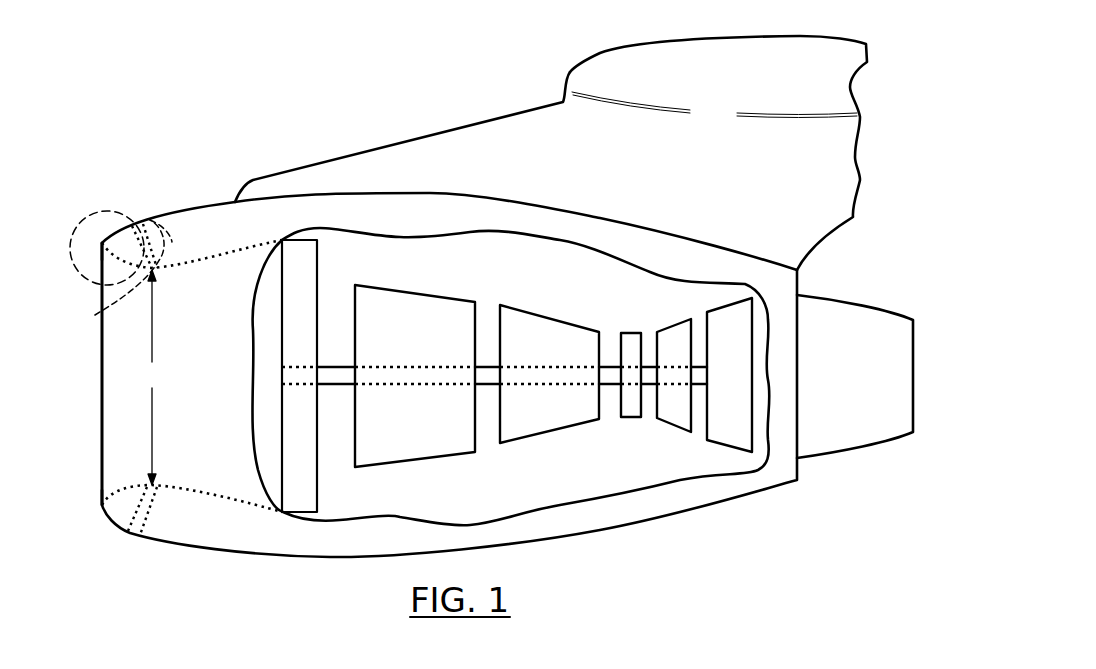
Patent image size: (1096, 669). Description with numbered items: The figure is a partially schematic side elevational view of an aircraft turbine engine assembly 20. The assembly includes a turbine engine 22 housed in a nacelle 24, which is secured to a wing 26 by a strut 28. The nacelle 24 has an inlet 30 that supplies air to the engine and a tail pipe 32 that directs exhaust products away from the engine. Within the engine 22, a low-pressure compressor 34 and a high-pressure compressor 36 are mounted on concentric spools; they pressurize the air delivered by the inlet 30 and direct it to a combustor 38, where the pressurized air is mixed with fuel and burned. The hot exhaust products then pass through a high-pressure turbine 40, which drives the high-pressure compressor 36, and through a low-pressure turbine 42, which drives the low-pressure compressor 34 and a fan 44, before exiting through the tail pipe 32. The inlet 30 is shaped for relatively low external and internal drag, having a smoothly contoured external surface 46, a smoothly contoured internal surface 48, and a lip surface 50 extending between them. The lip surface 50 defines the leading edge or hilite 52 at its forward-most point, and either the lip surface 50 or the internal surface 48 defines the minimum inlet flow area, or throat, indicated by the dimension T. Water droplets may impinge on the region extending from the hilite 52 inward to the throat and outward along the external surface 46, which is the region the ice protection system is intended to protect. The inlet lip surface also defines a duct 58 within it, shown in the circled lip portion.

The aircraft turbine engine assembly 20 is at (474, 363).
The turbine engine 22 is at (553, 477).
The nacelle 24 is at (449, 373).
The wing 26 is at (580, 62).
The strut 28 is at (456, 127).
The inlet 30 is at (92, 437).
The tail pipe 32 is at (855, 452).
The low-pressure compressor 34 is at (398, 464).
The high-pressure compressor 36 is at (523, 443).
The combustor 38 is at (631, 419).
The high-pressure turbine 40 is at (670, 430).
The low-pressure turbine 42 is at (727, 450).
The fan 44 is at (303, 515).
The external surface 46 is at (323, 193).
The internal surface 48 is at (95, 315).
The lip surface 50 is at (102, 241).
The hilite 52 is at (100, 244).
The duct 58 is at (157, 228).